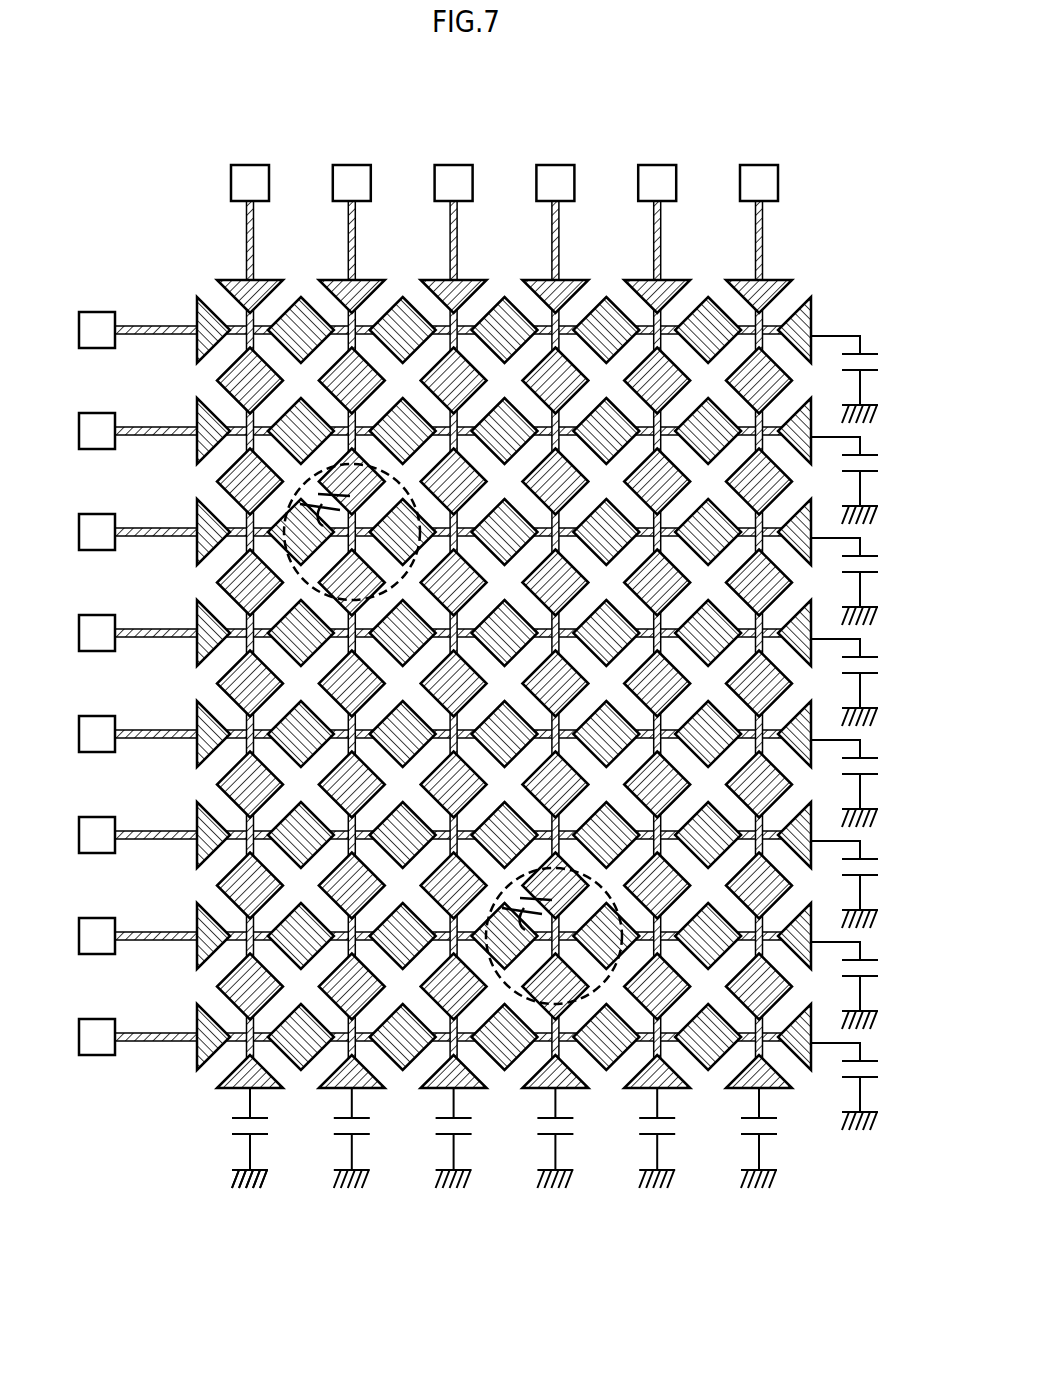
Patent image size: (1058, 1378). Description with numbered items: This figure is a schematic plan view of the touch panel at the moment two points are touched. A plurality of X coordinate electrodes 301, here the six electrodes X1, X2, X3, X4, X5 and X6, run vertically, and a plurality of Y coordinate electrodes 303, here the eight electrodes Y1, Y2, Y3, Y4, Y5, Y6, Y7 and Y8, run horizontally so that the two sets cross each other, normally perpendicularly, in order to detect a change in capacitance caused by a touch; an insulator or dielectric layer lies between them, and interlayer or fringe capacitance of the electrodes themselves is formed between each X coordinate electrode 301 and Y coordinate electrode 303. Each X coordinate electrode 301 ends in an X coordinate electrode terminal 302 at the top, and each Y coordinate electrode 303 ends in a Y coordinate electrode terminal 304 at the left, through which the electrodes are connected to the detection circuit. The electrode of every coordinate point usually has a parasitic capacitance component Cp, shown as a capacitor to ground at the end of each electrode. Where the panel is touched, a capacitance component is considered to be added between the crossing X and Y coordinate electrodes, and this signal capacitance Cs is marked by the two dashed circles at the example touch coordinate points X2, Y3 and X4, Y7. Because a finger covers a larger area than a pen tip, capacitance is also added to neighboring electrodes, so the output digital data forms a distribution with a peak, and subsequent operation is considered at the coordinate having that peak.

The X coordinate electrode 301 is at (232, 280).
The X coordinate electrode terminal 302 is at (816, 164).
The Y coordinate electrode 303 is at (158, 327).
The Y coordinate electrode terminal 304 is at (90, 1083).
The parasitic capacitance component Cp is at (257, 1140).
The signal capacitance Cs is at (412, 465).
The X coordinate electrode X1 is at (250, 164).
The X coordinate electrode X2 is at (352, 164).
The X coordinate electrode X3 is at (454, 164).
The X coordinate electrode X4 is at (555, 164).
The X coordinate electrode X5 is at (657, 164).
The X coordinate electrode X6 is at (759, 164).
The Y coordinate electrode Y1 is at (77, 330).
The Y coordinate electrode Y2 is at (77, 431).
The Y coordinate electrode Y3 is at (77, 532).
The Y coordinate electrode Y4 is at (77, 633).
The Y coordinate electrode Y5 is at (77, 734).
The Y coordinate electrode Y6 is at (77, 835).
The Y coordinate electrode Y7 is at (77, 936).
The Y coordinate electrode Y8 is at (77, 1037).